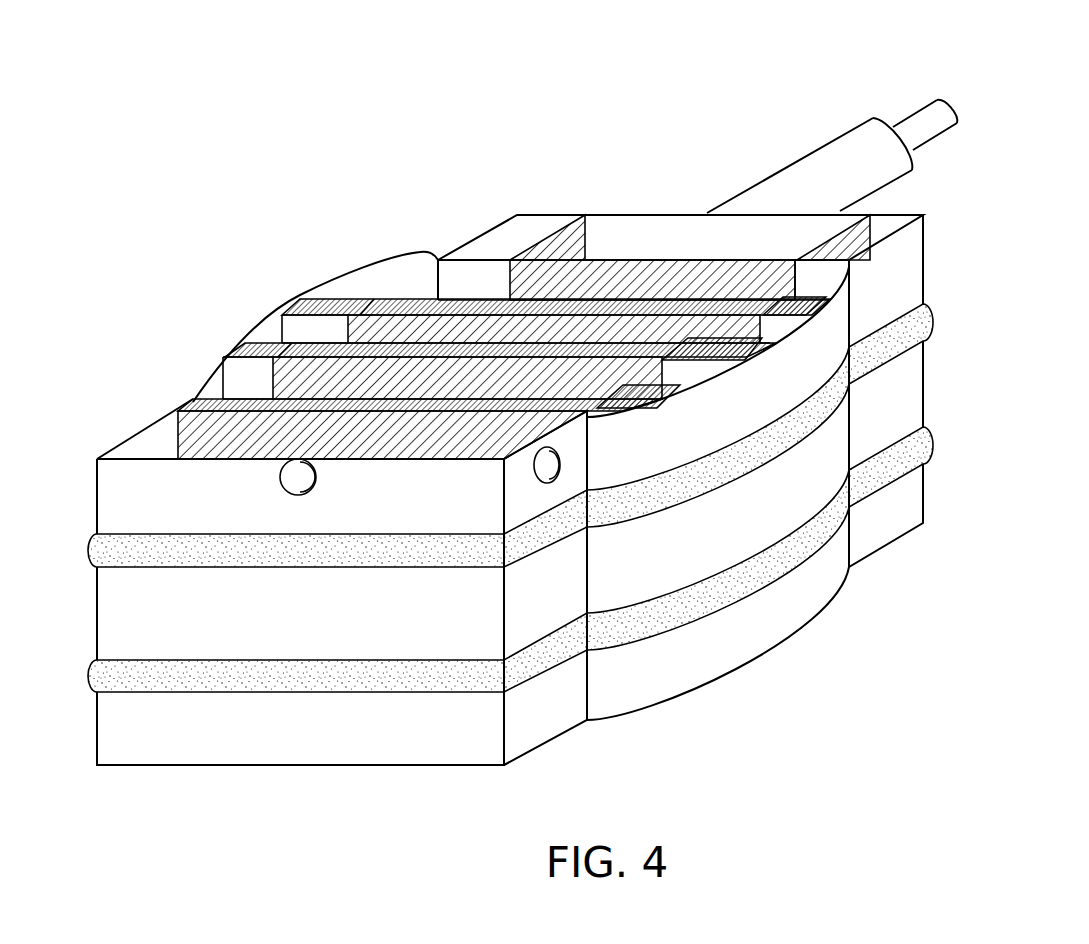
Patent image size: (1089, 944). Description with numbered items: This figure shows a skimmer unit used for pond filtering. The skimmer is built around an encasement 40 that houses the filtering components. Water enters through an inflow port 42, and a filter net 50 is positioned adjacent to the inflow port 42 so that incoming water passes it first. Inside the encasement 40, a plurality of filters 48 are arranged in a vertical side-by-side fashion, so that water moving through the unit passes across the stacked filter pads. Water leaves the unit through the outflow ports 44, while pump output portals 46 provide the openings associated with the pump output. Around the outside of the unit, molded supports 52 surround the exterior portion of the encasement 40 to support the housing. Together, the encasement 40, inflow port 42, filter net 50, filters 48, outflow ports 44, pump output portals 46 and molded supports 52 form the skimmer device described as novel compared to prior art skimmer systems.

The encasement 40 is at (192, 63).
The inflow port 42 is at (966, 101).
The outflow ports 44 is at (282, 477).
The pump output portals 46 is at (560, 462).
The filters 48 is at (389, 300).
The filter net 50 is at (604, 228).
The molded supports 52 is at (933, 322).